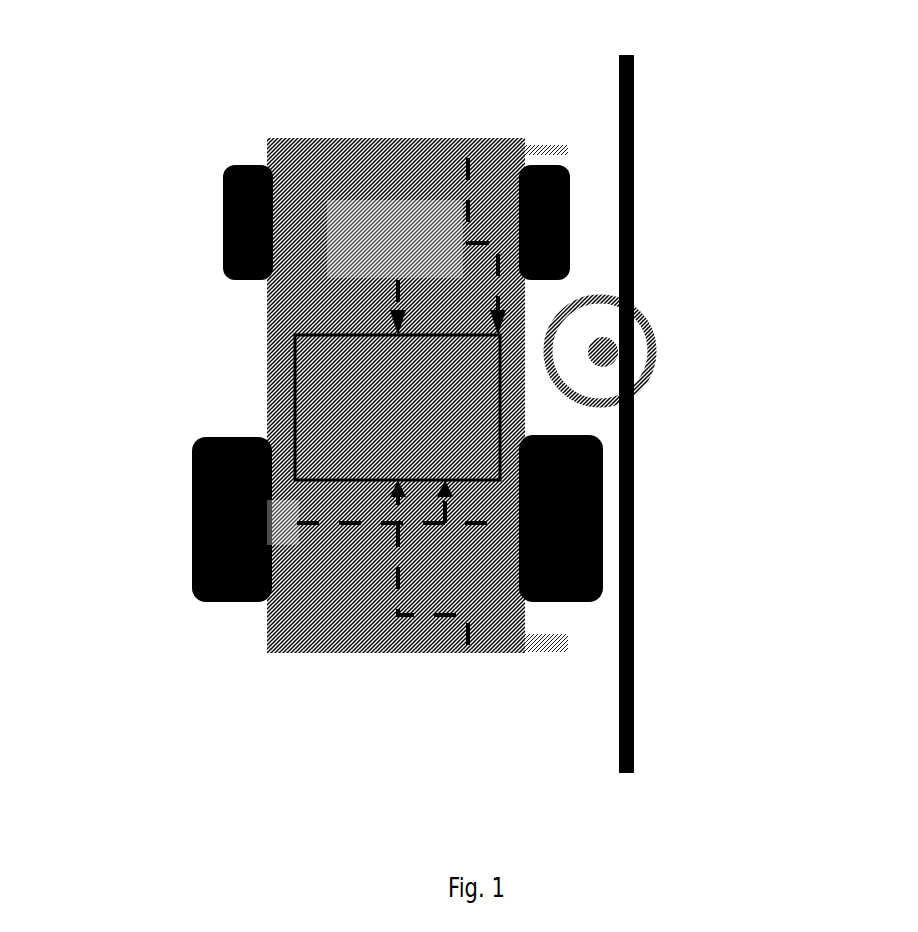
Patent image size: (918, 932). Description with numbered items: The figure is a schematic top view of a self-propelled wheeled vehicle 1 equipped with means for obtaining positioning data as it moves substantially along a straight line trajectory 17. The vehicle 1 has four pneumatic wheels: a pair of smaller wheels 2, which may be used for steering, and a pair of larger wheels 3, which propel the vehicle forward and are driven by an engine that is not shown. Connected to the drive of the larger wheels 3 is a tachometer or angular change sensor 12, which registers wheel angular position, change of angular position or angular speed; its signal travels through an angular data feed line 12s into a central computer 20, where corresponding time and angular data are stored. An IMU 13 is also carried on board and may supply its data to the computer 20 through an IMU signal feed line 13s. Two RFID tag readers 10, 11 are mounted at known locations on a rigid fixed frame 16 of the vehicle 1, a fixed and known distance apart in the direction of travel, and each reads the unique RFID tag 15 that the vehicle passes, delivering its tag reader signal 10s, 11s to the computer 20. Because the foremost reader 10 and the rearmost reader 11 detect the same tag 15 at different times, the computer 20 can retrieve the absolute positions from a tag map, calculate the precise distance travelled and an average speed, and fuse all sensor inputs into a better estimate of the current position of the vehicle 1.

The selfpropelled vehicle 1 is at (130, 187).
The smaller set of wheels 2 is at (223, 243).
The larger set of wheels 3 is at (185, 550).
The RFID tag reader 10 is at (508, 148).
The RFID tag reader signal 10s is at (498, 315).
The RFID tag reader 11 is at (527, 643).
The RFID tag reader signal 11s is at (390, 610).
The tachometer or angular change sensor 12 is at (287, 540).
The angular data feed line 12s is at (447, 520).
The IMU 13 is at (355, 235).
The IMU signal feed line 13s is at (397, 297).
The RFID tag 15 is at (633, 353).
The fixed frame 16 is at (648, 377).
The straight line trajectory 17 is at (634, 626).
The central computer 20 is at (295, 390).